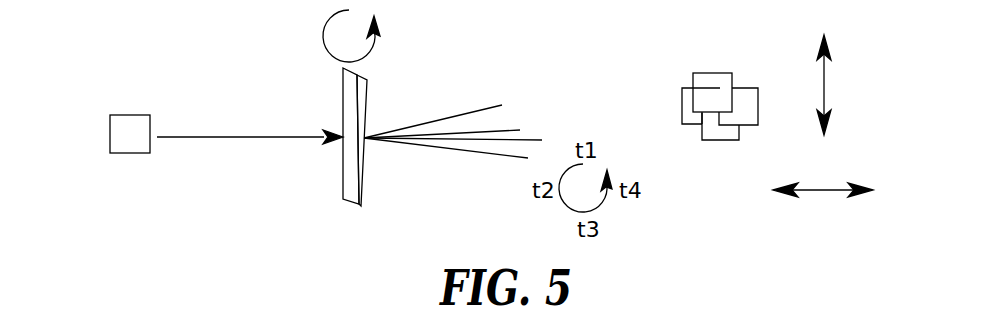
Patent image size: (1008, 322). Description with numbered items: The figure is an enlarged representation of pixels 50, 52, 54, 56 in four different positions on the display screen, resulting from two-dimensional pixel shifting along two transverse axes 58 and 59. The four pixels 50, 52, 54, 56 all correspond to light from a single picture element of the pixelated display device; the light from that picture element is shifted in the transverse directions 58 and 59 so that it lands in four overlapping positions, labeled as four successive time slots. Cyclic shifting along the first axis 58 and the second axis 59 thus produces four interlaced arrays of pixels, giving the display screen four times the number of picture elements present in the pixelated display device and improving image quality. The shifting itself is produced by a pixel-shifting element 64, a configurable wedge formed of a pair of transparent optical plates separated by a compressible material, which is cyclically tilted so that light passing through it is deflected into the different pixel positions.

The pixel 50 is at (712, 72).
The pixel 52 is at (690, 88).
The pixel 54 is at (739, 128).
The pixel 56 is at (747, 87).
The transverse axis 58 is at (827, 89).
The transverse axis 59 is at (823, 193).
The pixel-shifting element 64 is at (352, 82).